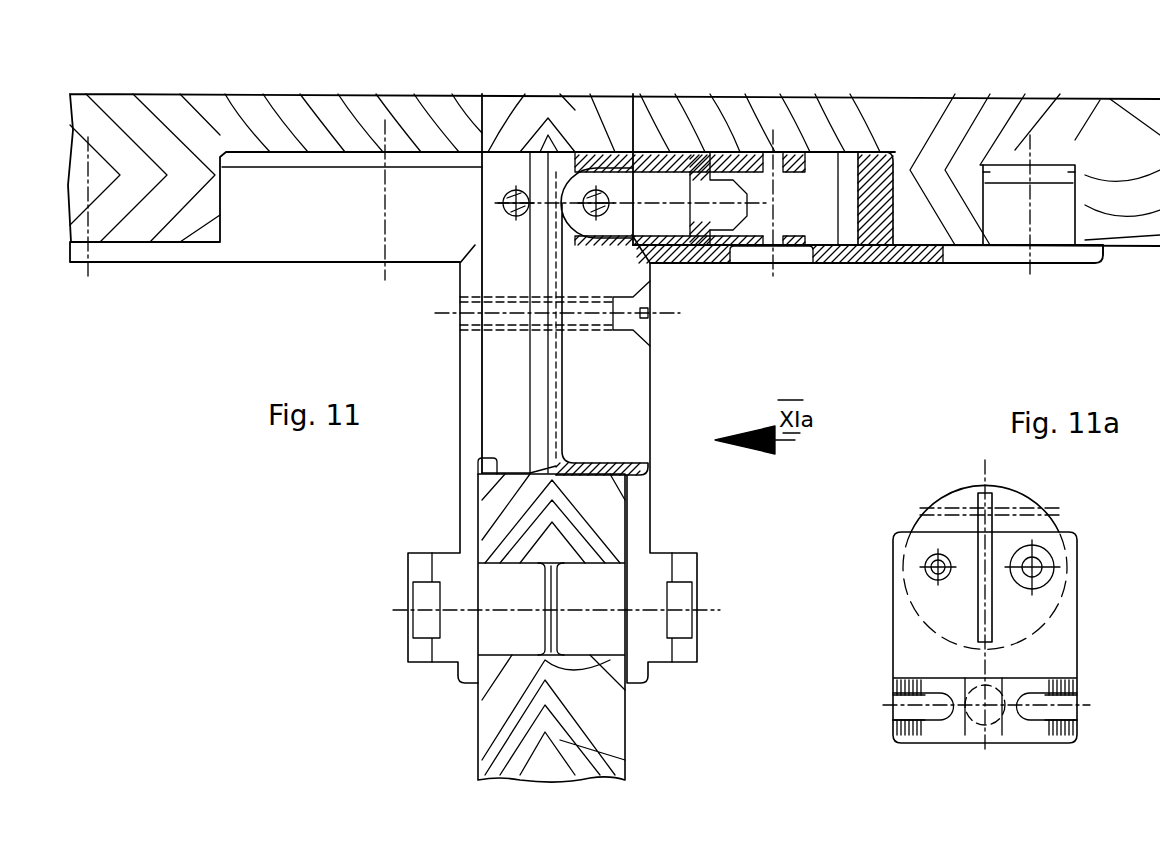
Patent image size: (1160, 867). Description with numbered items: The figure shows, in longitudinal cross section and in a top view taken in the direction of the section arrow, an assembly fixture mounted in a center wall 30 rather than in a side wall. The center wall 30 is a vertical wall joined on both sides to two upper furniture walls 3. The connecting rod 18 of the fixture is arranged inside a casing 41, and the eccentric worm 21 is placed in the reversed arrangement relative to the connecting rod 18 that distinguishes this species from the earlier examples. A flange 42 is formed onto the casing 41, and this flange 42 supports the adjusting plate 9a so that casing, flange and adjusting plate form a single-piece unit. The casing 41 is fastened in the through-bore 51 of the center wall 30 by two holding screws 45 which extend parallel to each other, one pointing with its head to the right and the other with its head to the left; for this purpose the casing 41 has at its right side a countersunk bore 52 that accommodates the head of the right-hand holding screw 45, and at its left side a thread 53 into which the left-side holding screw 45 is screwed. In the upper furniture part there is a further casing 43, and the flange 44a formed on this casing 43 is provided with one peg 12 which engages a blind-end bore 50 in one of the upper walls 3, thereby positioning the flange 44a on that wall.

In FIG. 11, the upper furniture wall 3 is at (280, 104).
In FIG. 11, the center wall 30 is at (528, 104).
In FIG. 11, the connecting rod 18 is at (652, 180).
In FIG. 11, the eccentric worm 21 is at (703, 162).
In FIG. 11, the casing 43 is at (870, 166).
In FIG. 11, the blind-end bore 50 is at (1087, 182).
In FIG. 11, the peg 12 is at (1105, 252).
In FIG. 11, the flange 44a is at (195, 254).
In FIG. 11, the holding screw 45 is at (652, 340).
In FIG. 11, the casing 41 is at (597, 462).
In FIG. 11A, the casing 41 is at (1022, 493).
In FIG. 11, the flange 42 is at (460, 406).
In FIG. 11A, the flange 42 is at (1078, 620).
In FIG. 11, the through-bore 51 is at (497, 466).
In FIG. 11, the adjusting plate 9a is at (443, 655).
In FIG. 11A, the adjusting plate 9a is at (1020, 692).
In FIG. 11A, the countersunk bore 52 is at (1056, 568).
In FIG. 11A, the thread 53 is at (926, 564).